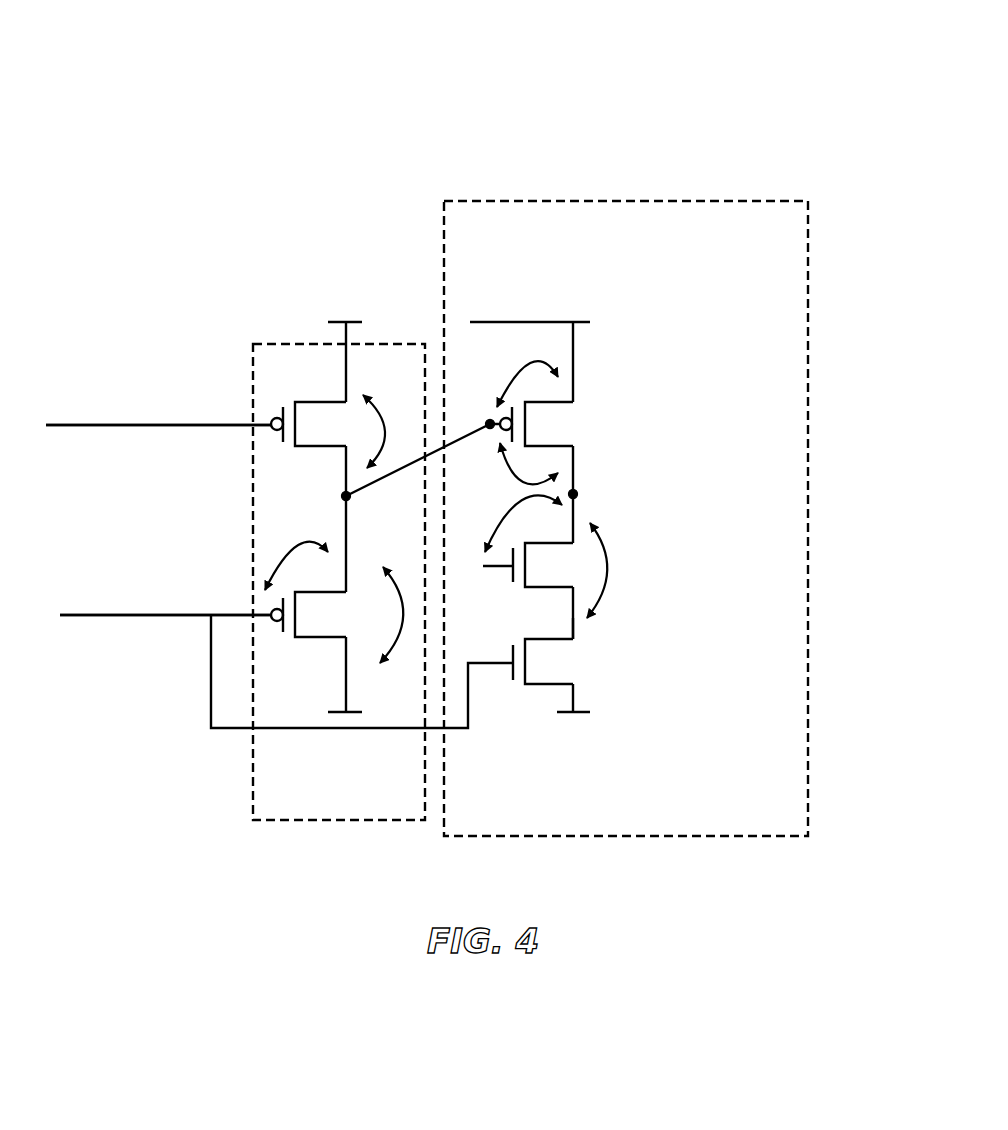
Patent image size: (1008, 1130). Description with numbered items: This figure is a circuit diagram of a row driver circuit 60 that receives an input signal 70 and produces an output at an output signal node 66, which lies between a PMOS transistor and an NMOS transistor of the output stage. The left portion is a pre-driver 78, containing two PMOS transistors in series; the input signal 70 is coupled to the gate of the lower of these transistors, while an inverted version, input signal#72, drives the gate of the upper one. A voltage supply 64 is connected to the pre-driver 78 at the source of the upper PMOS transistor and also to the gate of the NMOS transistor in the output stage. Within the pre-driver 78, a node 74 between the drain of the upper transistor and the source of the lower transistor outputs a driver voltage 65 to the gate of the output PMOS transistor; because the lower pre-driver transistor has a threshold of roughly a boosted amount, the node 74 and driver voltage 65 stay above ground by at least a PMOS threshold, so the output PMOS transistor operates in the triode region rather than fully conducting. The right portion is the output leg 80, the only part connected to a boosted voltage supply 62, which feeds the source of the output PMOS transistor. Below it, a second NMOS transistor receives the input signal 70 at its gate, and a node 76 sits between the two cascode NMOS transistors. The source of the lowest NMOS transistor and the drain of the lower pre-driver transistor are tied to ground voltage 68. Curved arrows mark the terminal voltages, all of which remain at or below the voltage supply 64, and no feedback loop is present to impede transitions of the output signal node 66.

The row driver circuit 60 is at (450, 128).
The boosted voltage supply 62 is at (582, 300).
The voltage supply 64 is at (346, 300).
The driver voltage 65 is at (392, 473).
The output signal node 66 is at (577, 494).
The ground voltage 68 is at (350, 715).
The input signal 70 is at (175, 617).
The input signal# 72 is at (238, 428).
The node 74 is at (346, 496).
The node 76 is at (576, 627).
The pre-driver 78 is at (262, 344).
The output leg 80 is at (810, 232).